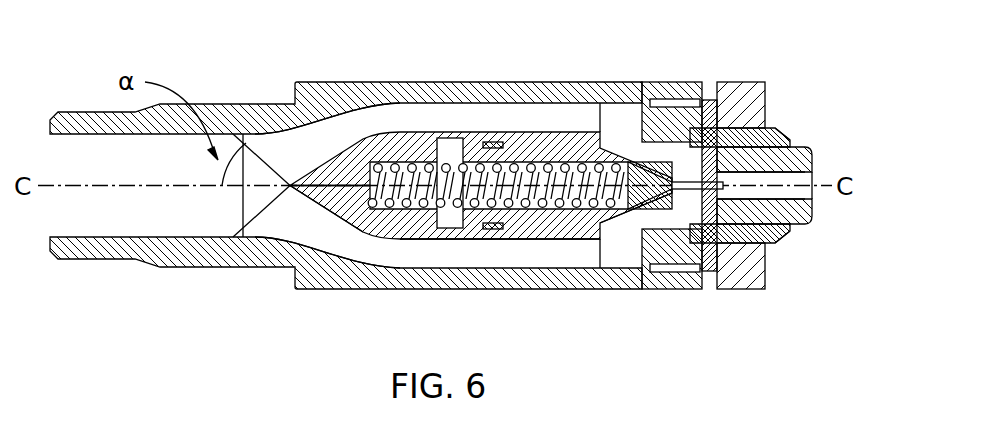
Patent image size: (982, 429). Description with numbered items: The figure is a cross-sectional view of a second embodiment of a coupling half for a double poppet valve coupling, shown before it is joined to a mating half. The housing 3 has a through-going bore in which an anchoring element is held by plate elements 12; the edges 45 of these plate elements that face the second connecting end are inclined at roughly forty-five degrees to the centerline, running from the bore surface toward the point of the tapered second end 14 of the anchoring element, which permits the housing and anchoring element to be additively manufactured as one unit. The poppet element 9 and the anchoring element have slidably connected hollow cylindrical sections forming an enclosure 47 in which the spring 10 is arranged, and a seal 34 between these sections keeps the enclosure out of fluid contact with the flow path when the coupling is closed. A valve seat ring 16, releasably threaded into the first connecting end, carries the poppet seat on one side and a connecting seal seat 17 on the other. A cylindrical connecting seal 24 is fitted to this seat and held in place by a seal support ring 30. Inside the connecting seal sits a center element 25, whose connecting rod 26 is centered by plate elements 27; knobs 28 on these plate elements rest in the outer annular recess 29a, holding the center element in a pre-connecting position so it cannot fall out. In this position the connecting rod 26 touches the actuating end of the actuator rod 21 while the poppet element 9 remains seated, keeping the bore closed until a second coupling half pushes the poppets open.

The housing 3 is at (397, 277).
The poppet element 9 is at (548, 222).
The spring 10 is at (413, 158).
The plate elements 12 is at (297, 152).
The second end 14 is at (323, 207).
The valve seat ring 16 is at (638, 105).
The connecting seal seat 17 is at (690, 240).
The actuator rod 21 is at (668, 100).
The cylindrical connecting seal 24 is at (747, 112).
The center element 25 is at (747, 240).
The connecting rod 26 is at (785, 200).
The plate elements 27 is at (790, 142).
The knobs 28 is at (765, 128).
The outer annular recess 29a is at (782, 185).
The seal support ring 30 is at (723, 280).
The seal 34 is at (492, 135).
The edges 45 is at (257, 133).
The enclosure 47 is at (443, 155).